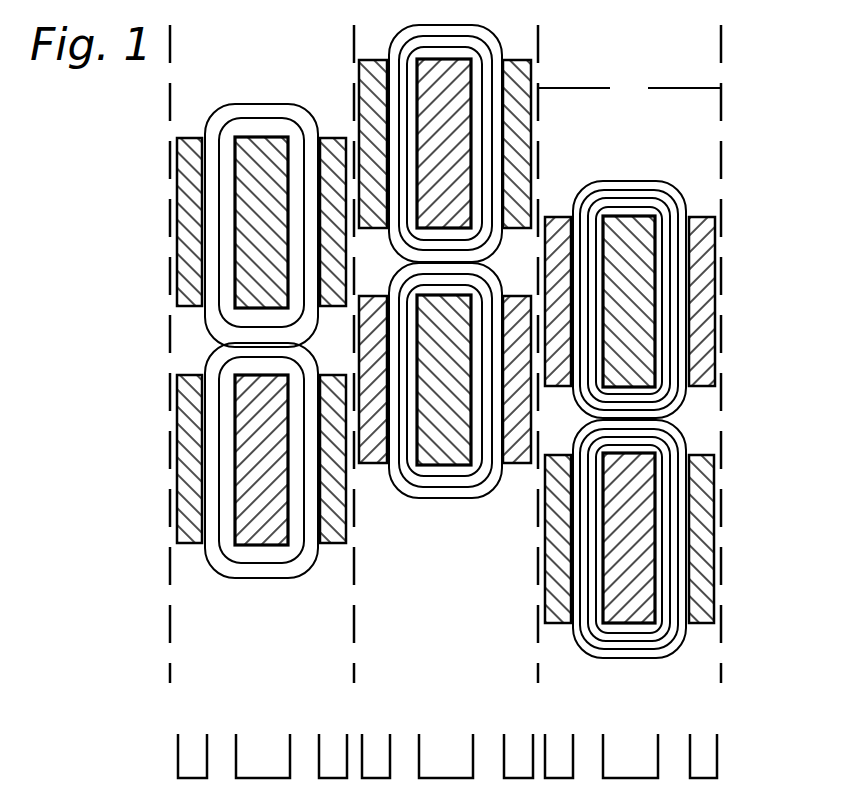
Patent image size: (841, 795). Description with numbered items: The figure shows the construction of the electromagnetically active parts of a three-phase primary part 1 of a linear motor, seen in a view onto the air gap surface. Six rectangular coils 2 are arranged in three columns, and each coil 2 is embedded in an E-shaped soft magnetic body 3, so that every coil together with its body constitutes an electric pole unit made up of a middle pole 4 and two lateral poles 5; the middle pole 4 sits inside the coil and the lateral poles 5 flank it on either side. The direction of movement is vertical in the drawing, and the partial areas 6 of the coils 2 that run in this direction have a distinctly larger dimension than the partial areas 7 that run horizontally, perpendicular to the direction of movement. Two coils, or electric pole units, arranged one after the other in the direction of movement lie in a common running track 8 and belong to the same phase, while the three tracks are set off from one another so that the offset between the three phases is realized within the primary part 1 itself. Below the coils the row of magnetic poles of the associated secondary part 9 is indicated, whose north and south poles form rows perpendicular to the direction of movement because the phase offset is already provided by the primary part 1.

The primary part 1 is at (448, 550).
The rectangular coil 2 is at (706, 200).
The E-shaped soft magnetic body 3 is at (727, 285).
The middle pole 4 is at (637, 357).
The lateral pole 5 is at (705, 505).
The partial area of coil in direction of movement 6 is at (673, 547).
The partial area of coil perpendicular to direction of movement 7 is at (630, 643).
The running track 8 is at (629, 88).
The secondary part 9 is at (479, 716).